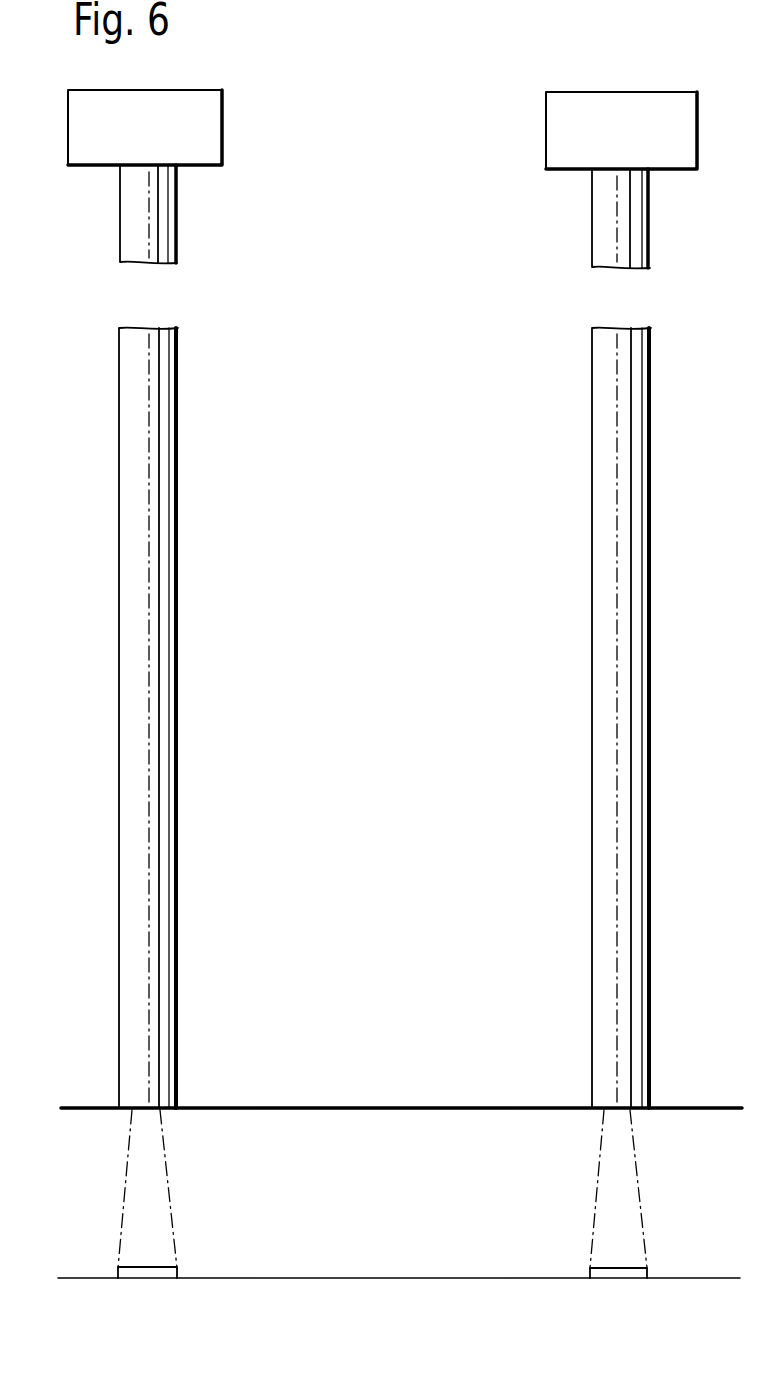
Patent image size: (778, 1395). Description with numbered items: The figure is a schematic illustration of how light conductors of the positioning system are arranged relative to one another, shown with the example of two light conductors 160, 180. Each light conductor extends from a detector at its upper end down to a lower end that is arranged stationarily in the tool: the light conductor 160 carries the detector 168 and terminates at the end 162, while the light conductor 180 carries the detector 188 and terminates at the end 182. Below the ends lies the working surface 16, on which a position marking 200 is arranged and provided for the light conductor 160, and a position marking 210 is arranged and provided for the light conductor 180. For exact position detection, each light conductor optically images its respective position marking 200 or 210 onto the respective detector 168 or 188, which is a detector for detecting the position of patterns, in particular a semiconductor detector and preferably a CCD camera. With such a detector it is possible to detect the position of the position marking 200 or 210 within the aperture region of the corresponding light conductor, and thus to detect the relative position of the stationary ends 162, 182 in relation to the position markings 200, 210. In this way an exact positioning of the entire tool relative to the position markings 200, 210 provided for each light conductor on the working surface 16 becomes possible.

The working surface 16 is at (73, 1277).
The light conductor 160 is at (602, 355).
The end of light conductor 162 is at (602, 1112).
The detector 168 is at (558, 152).
The light conductor 180 is at (168, 363).
The end of light conductor 182 is at (161, 1112).
The detector 188 is at (207, 150).
The position marking 200 is at (615, 1279).
The position marking 210 is at (160, 1272).